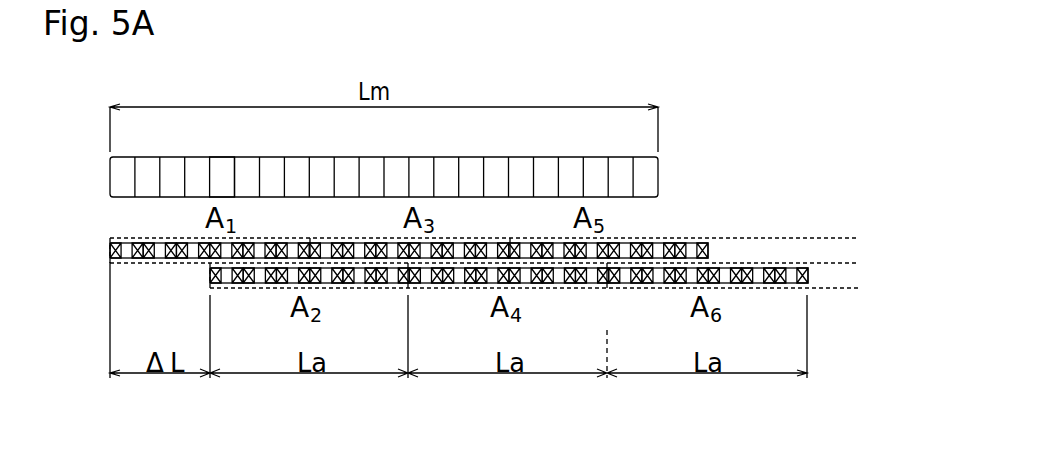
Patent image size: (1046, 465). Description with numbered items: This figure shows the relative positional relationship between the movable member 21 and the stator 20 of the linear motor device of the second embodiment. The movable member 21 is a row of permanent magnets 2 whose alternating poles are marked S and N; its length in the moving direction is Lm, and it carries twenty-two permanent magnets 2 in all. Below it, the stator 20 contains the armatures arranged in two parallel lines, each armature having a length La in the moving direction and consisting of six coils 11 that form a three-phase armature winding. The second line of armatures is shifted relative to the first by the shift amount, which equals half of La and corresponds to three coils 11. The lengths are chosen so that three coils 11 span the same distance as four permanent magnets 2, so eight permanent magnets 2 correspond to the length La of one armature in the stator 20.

The permanent magnet 2 is at (384, 127).
The movable member 21 is at (228, 157).
The stator 20 is at (484, 172).
The coil 11 is at (508, 248).